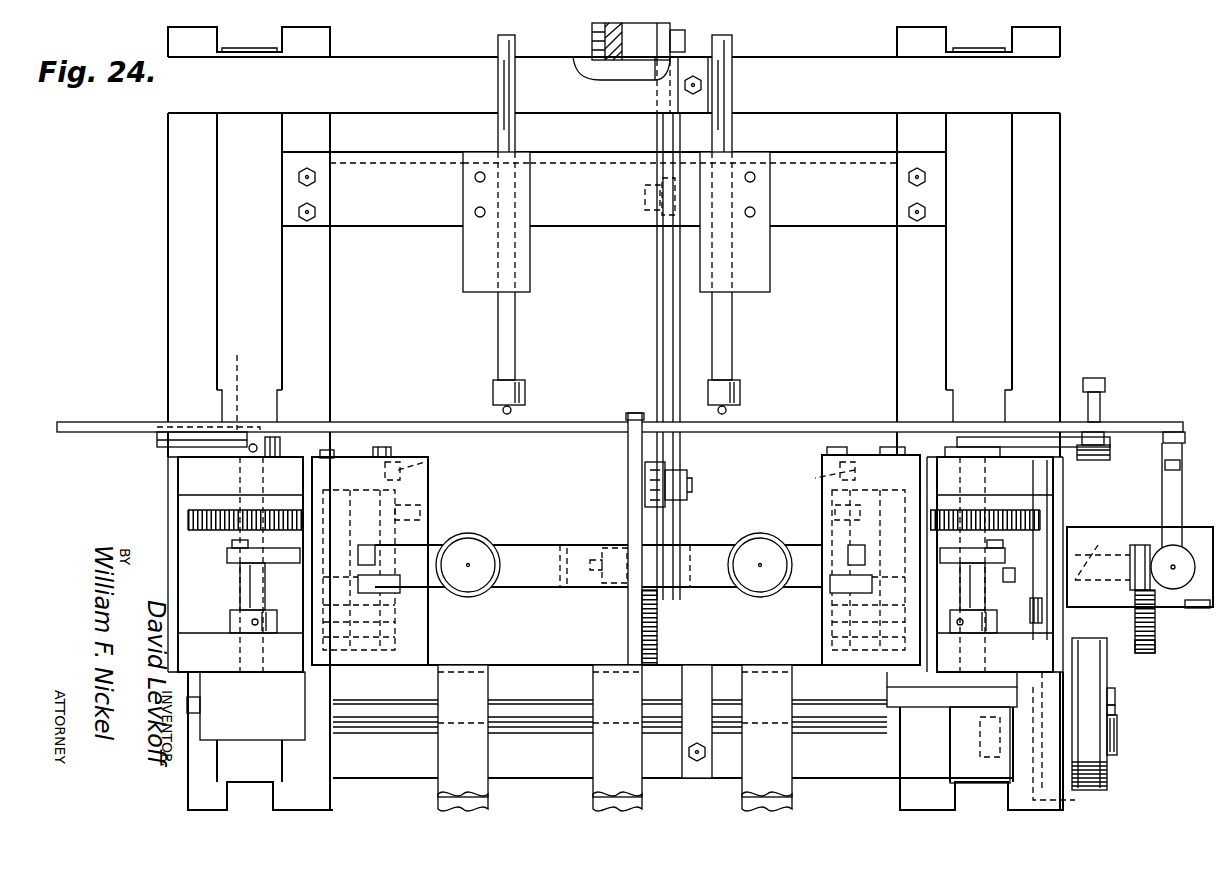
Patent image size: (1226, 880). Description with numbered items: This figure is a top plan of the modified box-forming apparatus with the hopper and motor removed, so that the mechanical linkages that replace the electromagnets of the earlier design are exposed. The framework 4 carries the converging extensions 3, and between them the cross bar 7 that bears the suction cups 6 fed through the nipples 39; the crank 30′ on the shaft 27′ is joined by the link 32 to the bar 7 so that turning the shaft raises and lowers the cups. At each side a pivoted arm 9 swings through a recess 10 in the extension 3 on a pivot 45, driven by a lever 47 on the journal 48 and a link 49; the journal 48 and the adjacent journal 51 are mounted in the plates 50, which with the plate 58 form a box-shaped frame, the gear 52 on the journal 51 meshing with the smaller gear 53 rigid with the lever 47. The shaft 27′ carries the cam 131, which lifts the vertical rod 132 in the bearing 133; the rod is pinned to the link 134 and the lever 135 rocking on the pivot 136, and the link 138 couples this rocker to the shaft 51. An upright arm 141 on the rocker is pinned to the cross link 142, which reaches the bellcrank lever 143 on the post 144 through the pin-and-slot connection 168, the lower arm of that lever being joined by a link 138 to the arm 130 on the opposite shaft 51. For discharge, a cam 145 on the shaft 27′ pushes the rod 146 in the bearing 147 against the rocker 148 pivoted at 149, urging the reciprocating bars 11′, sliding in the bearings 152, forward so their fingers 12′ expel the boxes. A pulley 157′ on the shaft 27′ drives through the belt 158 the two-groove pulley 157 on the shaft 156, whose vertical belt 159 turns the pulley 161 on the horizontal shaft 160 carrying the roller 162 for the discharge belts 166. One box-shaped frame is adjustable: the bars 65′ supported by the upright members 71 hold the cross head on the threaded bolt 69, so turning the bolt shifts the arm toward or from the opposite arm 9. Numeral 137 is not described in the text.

The converging extensions or bending members 3 is at (385, 455).
The framework 4 is at (1060, 230).
The suction cups 6 is at (490, 530).
The cross bar or member 7 is at (535, 545).
The pivoted arms 9 is at (375, 555).
The recesses 10 is at (400, 585).
The reciprocating bars 11′ is at (517, 80).
The projections or fingers 12′ is at (527, 392).
The shaft 27′ is at (1028, 500).
The crank 30′ is at (630, 630).
The link 32 is at (600, 548).
The nipples 39 is at (1150, 598).
The pivots 45 is at (620, 470).
The lever 47 is at (227, 560).
The pivot or journal 48 is at (340, 450).
The link 49 is at (232, 548).
The plates 50 is at (610, 564).
The journal 51 is at (240, 592).
The gear 52 is at (188, 515).
The gear 53 is at (420, 512).
The plate 58 is at (168, 555).
The top horizontal bar 65′ is at (268, 740).
The threaded rod or bolt 69 is at (190, 713).
The upright frame members 71 is at (1133, 622).
The arm 130 is at (285, 437).
The cam 131 is at (1155, 645).
The vertical rod 132 is at (1190, 608).
The guide or bearing 133 is at (1182, 560).
The vertical link 134 is at (1186, 450).
The lever 135 is at (1183, 440).
The pivot pin or journal 136 is at (1104, 438).
The bolt 137 is at (1102, 385).
The link 138 is at (1025, 437).
The upright arm 141 is at (1112, 452).
The cross link 142 is at (70, 420).
The bellcrank lever 143 is at (190, 432).
The post 144 is at (238, 382).
The cam 145 is at (658, 627).
The rod 146 is at (668, 361).
The bearing 147 is at (655, 262).
The rocker 148 is at (590, 40).
The pivot 149 is at (688, 38).
The bearings 152 is at (772, 256).
The shaft 156 is at (1117, 738).
The pulley 157 is at (1107, 778).
The pulley 157′ is at (1012, 568).
The belt 158 is at (1030, 615).
The vertical belt 159 is at (1098, 668).
The horizontal shaft 160 is at (1115, 710).
The pulley 161 is at (1115, 695).
The roller 162 is at (522, 665).
The discharge belts or bands 166 is at (593, 798).
The pin-and-slot connection 168 is at (262, 452).